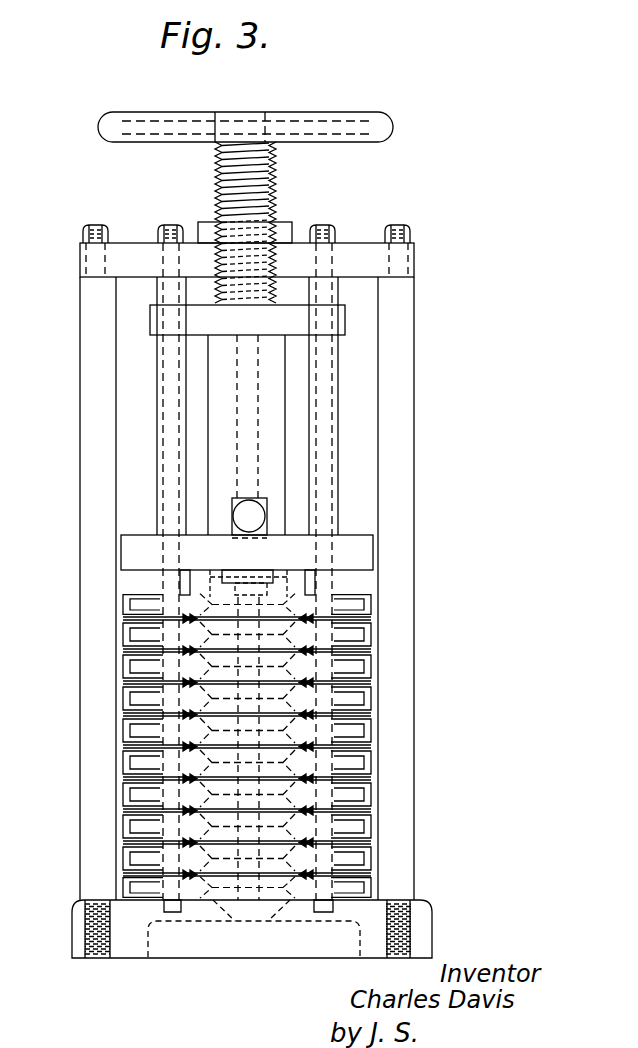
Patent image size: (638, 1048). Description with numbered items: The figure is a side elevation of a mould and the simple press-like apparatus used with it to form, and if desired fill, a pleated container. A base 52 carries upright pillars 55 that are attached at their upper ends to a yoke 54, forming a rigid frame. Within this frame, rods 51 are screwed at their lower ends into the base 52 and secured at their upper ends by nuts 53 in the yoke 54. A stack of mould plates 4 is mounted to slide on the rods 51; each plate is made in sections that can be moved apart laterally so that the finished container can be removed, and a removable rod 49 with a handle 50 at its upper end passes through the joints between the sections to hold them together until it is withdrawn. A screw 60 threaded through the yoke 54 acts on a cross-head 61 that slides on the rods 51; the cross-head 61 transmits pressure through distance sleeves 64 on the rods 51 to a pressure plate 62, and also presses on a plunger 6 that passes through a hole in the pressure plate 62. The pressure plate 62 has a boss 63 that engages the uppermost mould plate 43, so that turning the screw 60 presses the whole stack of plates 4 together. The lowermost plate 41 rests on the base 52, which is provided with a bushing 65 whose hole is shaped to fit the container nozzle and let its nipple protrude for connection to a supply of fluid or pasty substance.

The plates 4 is at (125, 692).
The plunger 6 is at (220, 382).
The lowermost plate 41 is at (132, 887).
The uppermost mould plate 43 is at (123, 598).
The removable rod 49 is at (255, 552).
The handle 50 is at (255, 513).
The rods 51 is at (338, 462).
The base 52 is at (80, 926).
The nuts 53 is at (333, 234).
The yoke 54 is at (122, 250).
The pillars 55 is at (415, 655).
The screw 60 is at (278, 165).
The cross-head 61 is at (345, 322).
The pressure plate 62 is at (373, 548).
The boss 63 is at (280, 578).
The distance sleeves 64 is at (338, 413).
The bushing 65 is at (293, 921).